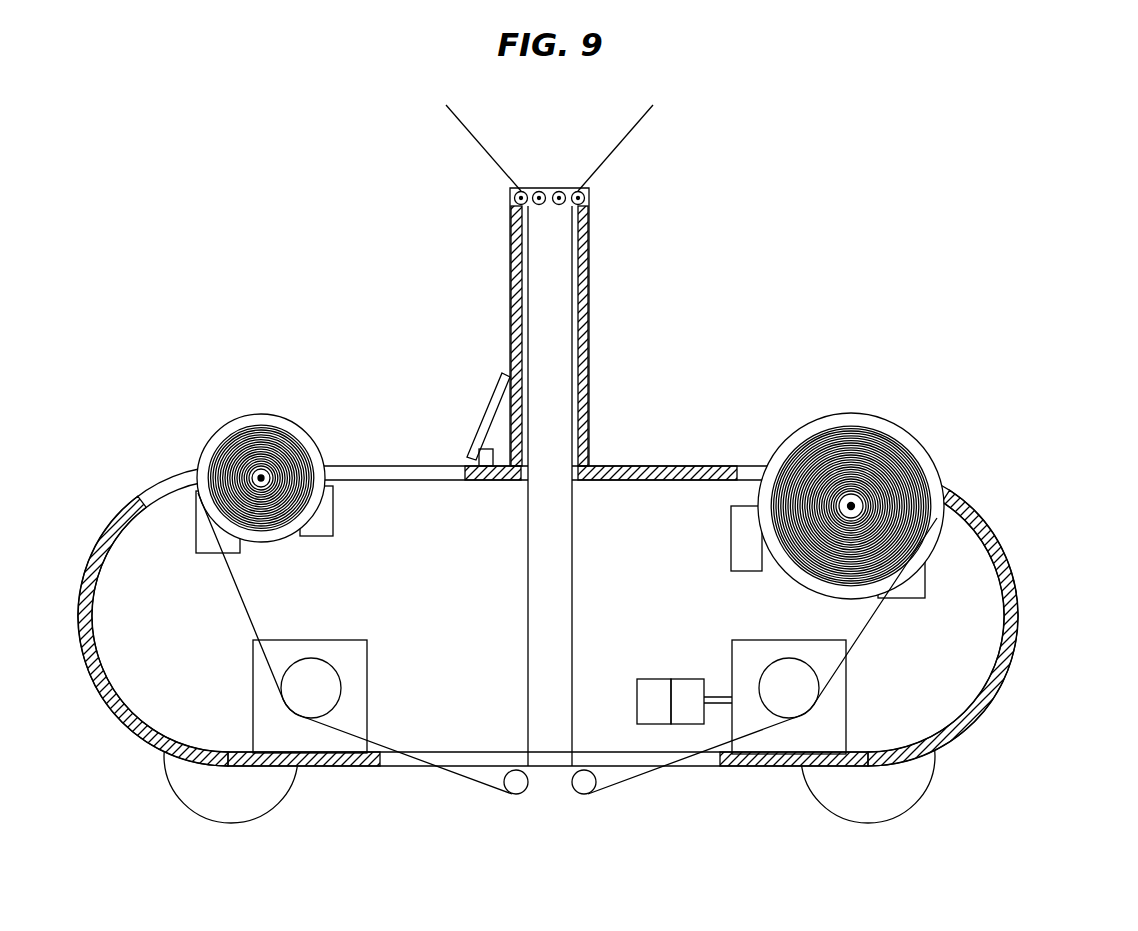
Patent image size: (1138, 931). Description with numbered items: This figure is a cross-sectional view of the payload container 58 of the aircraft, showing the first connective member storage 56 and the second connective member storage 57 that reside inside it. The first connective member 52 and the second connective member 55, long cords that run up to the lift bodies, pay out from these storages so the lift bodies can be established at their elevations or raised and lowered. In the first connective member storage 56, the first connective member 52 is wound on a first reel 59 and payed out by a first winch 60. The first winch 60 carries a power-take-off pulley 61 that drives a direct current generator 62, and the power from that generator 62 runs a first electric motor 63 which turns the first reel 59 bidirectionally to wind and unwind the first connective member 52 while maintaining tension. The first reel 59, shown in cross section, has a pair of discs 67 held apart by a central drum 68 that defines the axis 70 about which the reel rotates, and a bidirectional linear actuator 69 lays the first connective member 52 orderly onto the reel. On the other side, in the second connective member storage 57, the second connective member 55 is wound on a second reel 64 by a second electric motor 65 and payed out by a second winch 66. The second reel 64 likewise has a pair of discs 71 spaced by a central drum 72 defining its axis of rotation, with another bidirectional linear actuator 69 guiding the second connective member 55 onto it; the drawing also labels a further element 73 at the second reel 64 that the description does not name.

The first connective member 52 is at (632, 130).
The second connective member 55 is at (473, 135).
The first connective member storage 56 is at (726, 616).
The second connective member storage 57 is at (348, 604).
The payload container 58 is at (1035, 612).
The first reel 59 is at (487, 414).
The first winch 60 is at (846, 690).
The power-take-off pulley 61 is at (701, 701).
The direct current generator 62 is at (654, 701).
The first electric motor 63 is at (731, 536).
The second reel 64 is at (262, 441).
The second electric motor 65 is at (333, 507).
The second winch 66 is at (253, 690).
The pair of discs 67 is at (885, 415).
The central drum 68 is at (848, 506).
The bidirectional linear actuator 69 is at (196, 532).
The axis 70 is at (851, 508).
The pair of discs 71 is at (313, 434).
The central drum 72 is at (251, 477).
The wound cable 73 is at (257, 468).